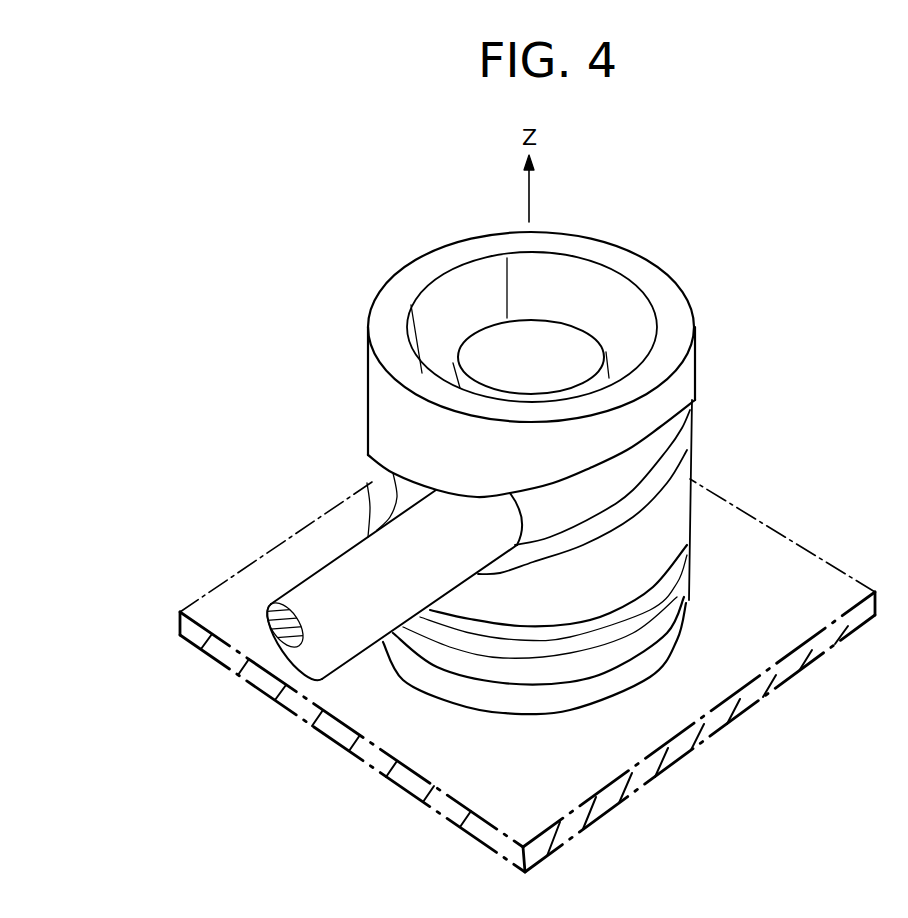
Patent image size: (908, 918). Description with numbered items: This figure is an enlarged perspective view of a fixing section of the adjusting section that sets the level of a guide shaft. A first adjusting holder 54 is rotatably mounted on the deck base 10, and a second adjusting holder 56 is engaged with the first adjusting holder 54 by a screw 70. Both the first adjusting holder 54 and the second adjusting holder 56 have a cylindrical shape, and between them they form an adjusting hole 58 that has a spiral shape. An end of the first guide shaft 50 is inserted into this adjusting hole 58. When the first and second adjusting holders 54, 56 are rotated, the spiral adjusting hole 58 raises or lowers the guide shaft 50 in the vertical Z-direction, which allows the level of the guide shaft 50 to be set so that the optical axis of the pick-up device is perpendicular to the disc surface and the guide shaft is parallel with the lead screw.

The deck base 10 is at (690, 717).
The first guide shaft 50 is at (350, 637).
The first adjusting holder 54 is at (670, 526).
The second adjusting holder 56 is at (670, 297).
The adjusting hole 58 is at (643, 458).
The screw 70 is at (545, 342).